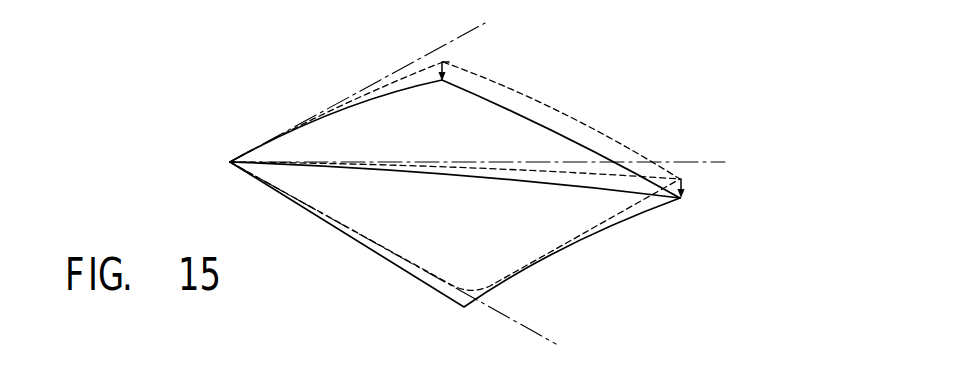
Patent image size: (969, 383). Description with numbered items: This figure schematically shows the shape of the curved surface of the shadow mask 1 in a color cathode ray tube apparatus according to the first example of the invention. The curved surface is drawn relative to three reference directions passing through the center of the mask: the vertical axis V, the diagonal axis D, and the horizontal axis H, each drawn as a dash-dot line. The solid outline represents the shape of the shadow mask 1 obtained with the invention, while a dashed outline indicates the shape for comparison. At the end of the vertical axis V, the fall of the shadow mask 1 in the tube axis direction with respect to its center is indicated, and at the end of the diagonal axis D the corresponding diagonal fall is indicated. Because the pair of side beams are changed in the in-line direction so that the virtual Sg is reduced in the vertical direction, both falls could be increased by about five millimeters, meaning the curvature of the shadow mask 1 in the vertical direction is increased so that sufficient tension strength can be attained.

The shadow mask 1 is at (567, 252).
The vertical axis V is at (366, 83).
The diagonal axis D is at (489, 163).
The horizontal axis H is at (403, 261).